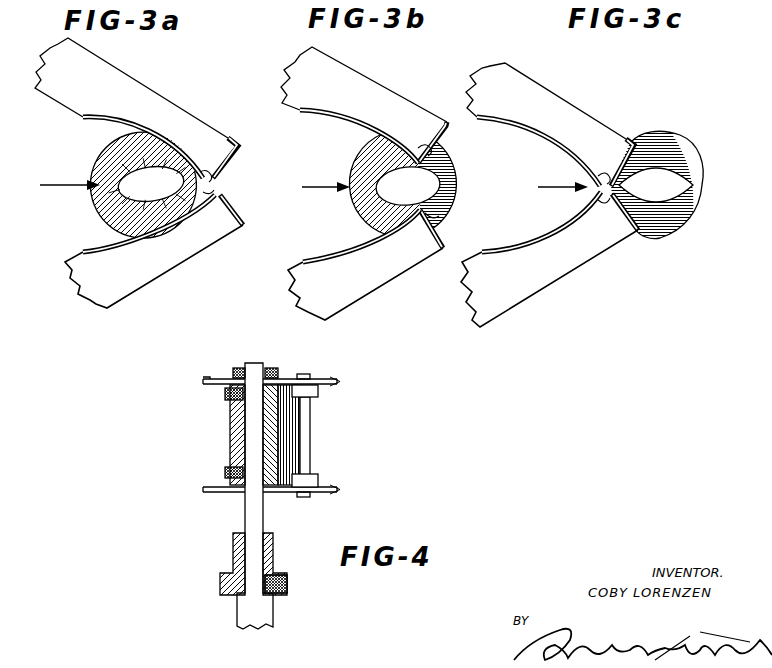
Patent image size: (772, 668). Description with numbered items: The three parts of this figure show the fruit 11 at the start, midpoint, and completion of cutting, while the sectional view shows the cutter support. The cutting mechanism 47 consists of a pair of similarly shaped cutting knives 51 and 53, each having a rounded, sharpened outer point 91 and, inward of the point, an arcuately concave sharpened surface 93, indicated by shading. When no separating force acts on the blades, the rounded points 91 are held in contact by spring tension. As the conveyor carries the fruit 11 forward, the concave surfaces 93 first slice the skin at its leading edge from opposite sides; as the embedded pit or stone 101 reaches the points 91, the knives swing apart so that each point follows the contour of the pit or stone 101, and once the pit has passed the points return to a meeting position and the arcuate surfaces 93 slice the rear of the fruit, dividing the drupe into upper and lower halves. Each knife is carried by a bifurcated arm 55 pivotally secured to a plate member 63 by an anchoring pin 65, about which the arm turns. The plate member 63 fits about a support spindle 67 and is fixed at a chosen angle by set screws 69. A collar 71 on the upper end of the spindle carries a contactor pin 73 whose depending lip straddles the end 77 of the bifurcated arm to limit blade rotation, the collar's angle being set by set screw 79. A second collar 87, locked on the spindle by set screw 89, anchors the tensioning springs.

In FIG. 3A, the fruit 11 is at (105, 150).
In FIG. 3B, the fruit 11 is at (352, 208).
In FIG. 3C, the fruit 11 is at (690, 152).
In FIG. 3A, the fruit pit or stone 101 is at (118, 191).
In FIG. 3B, the fruit pit or stone 101 is at (392, 172).
In FIG. 3C, the fruit pit or stone 101 is at (694, 187).
In FIG. 3A, the cutting mechanism 47 is at (222, 137).
In FIG. 3B, the cutting mechanism 47 is at (433, 110).
In FIG. 3C, the cutting mechanism 47 is at (617, 133).
In FIG. 3A, the cutting knife 51 is at (226, 137).
In FIG. 3B, the cutting knife 51 is at (402, 108).
In FIG. 3C, the cutting knife 51 is at (595, 132).
In FIG. 3A, the cutting knife 53 is at (207, 236).
In FIG. 3B, the cutting knife 53 is at (420, 255).
In FIG. 3C, the cutting knife 53 is at (615, 233).
In FIG. 3A, the outer point 91 is at (222, 181).
In FIG. 3B, the outer point 91 is at (433, 147).
In FIG. 3C, the outer point 91 is at (605, 176).
In FIG. 3A, the arcuate concave surface 93 is at (156, 127).
In FIG. 3B, the arcuate concave surface 93 is at (348, 110).
In FIG. 3C, the arcuate concave surface 93 is at (545, 141).
In FIG. 4, the bifurcated arm 55 is at (337, 379).
In FIG. 4, the plate member 63 is at (298, 450).
In FIG. 4, the anchoring pin 65 is at (305, 375).
In FIG. 4, the support spindle 67 is at (245, 519).
In FIG. 4, the set screws 69 is at (225, 396).
In FIG. 4, the collar 71 is at (232, 374).
In FIG. 4, the contactor pin 73 is at (240, 368).
In FIG. 4, the end of bifurcated member 77 is at (209, 382).
In FIG. 4, the set screw 79 is at (275, 371).
In FIG. 4, the collar 87 is at (236, 560).
In FIG. 4, the set screw 89 is at (289, 584).